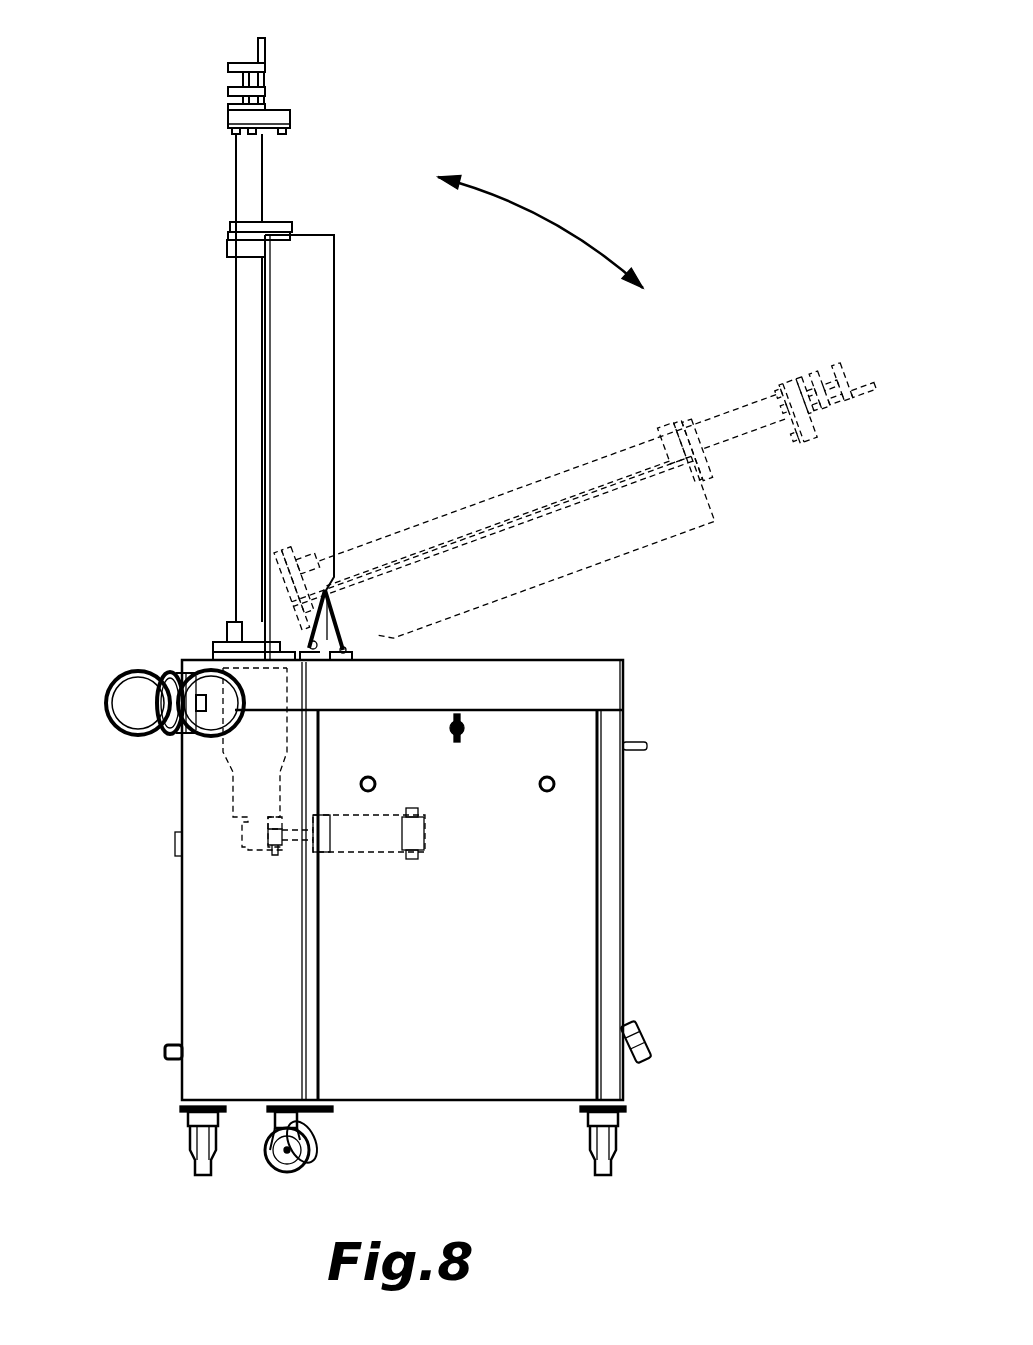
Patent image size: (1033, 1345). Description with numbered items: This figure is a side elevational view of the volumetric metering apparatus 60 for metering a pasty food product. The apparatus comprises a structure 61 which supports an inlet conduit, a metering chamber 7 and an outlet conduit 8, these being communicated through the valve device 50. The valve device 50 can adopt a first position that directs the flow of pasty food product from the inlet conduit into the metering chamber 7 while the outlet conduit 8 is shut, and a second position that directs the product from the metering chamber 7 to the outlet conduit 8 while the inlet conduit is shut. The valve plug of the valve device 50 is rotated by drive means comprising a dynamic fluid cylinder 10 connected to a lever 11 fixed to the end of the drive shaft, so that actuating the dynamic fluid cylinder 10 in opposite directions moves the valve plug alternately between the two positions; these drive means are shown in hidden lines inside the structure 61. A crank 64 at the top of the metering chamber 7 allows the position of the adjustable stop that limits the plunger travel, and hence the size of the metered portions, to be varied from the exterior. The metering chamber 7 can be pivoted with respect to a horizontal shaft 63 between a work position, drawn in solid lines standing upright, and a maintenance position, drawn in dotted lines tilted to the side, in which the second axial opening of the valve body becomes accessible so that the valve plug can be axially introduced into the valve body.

The metering chamber 7 is at (243, 380).
The outlet conduit 8 is at (196, 676).
The dynamic fluid cylinder 10 is at (371, 848).
The lever 11 is at (272, 858).
The valve device 50 is at (198, 765).
The volumetric metering apparatus 60 is at (447, 396).
The structure 61 is at (615, 900).
The horizontal shaft 63 is at (336, 630).
The crank 64 is at (233, 66).